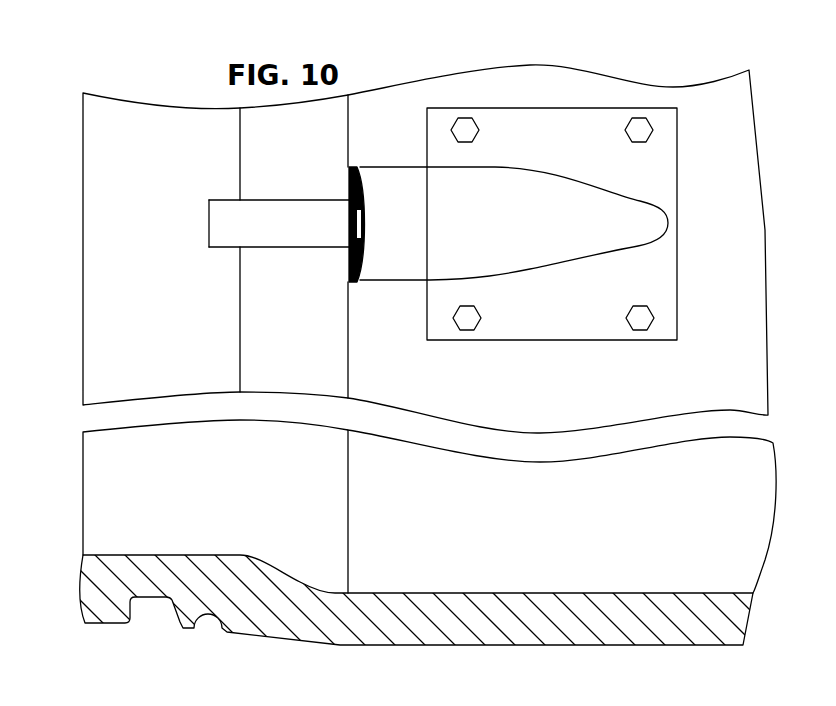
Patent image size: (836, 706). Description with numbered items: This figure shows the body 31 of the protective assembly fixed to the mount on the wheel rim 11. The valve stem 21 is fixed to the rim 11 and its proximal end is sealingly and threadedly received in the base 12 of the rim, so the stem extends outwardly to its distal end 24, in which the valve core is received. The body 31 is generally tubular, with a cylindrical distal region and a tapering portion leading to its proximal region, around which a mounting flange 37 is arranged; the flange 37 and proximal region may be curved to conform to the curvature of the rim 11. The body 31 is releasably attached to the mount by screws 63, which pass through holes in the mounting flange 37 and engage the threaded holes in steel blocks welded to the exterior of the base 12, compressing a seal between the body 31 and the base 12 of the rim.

The wheel rim 11 is at (716, 86).
The base 12 is at (656, 88).
The valve stem 21 is at (297, 236).
The distal end 24 is at (226, 246).
The body 31 is at (413, 272).
The mounting flange 37 is at (669, 287).
The screws 63 is at (473, 133).